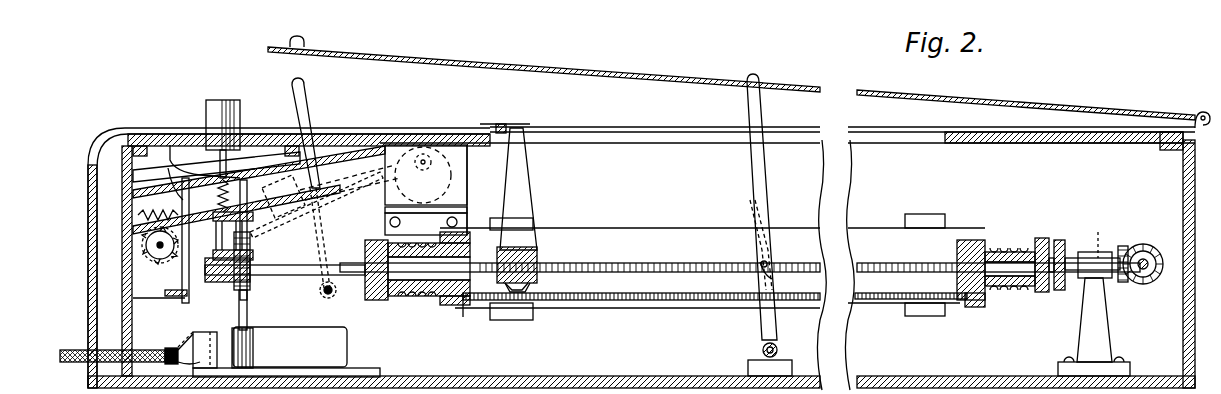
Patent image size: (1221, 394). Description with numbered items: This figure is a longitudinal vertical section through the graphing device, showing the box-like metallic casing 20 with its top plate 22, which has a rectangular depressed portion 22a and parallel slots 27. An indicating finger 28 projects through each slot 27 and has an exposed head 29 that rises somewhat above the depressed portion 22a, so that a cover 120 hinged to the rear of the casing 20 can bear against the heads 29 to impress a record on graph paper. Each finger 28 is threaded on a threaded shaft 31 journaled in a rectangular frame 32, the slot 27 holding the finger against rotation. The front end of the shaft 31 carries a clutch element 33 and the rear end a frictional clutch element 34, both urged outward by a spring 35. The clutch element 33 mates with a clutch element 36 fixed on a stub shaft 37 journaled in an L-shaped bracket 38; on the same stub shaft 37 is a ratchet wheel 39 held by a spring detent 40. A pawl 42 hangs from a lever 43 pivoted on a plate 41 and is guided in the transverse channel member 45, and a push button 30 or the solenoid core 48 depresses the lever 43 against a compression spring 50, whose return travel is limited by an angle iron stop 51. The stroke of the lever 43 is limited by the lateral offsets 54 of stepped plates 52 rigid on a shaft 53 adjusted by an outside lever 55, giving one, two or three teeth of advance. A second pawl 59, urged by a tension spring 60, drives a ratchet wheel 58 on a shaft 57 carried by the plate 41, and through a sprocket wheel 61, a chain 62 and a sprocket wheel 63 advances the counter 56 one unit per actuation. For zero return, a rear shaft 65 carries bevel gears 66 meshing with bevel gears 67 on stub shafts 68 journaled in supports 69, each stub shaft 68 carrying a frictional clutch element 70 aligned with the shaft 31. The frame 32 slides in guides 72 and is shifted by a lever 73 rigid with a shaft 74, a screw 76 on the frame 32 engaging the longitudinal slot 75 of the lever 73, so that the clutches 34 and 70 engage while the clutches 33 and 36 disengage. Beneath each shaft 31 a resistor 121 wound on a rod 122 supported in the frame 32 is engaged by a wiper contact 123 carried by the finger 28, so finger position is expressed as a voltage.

The casing 20 is at (500, 124).
The top plate 22 is at (1055, 135).
The depressed portion 22a is at (332, 132).
The slots 27 is at (612, 144).
The indicating finger 28 is at (522, 192).
The head 29 is at (518, 128).
The push button 30 is at (220, 100).
The threaded shaft 31 is at (636, 262).
The frame 32 is at (692, 240).
The clutch element 33 is at (408, 300).
The frictional clutch element 34 is at (1040, 292).
The spring 35 is at (426, 243).
The clutch element 36 is at (378, 300).
The stub shaft 37 is at (290, 276).
The L-shaped bracket 38 is at (310, 320).
The ratchet wheel 39 is at (250, 300).
The spring detent 40 is at (238, 307).
The plate 41 is at (125, 190).
The pawl 42 is at (248, 186).
The lever 43 is at (175, 134).
The channel member 45 is at (252, 246).
The core 48 is at (210, 323).
The compression spring 50 is at (218, 190).
The angle iron stop 51 is at (280, 134).
The plates 52 is at (322, 222).
The shaft 53 is at (332, 298).
The lateral offsets 54 is at (272, 222).
The lever 55 is at (302, 96).
The counter 56 is at (468, 168).
The shaft 57 is at (160, 260).
The ratchet wheel 58 is at (170, 296).
The second pawl 59 is at (170, 178).
The tension spring 60 is at (158, 205).
The sprocket wheel 61 is at (120, 250).
The chain 62 is at (340, 175).
The sprocket wheel 63 is at (440, 176).
The shaft 65 is at (1146, 256).
The bevel gear 66 is at (1152, 280).
The bevel gear 67 is at (1126, 246).
The stub shaft 68 is at (1092, 245).
The support 69 is at (1108, 328).
The frictional clutch element 70 is at (1058, 238).
The guides 72 is at (515, 320).
The lever 73 is at (758, 112).
The shaft 74 is at (778, 348).
The longitudinal slot 75 is at (776, 279).
The screw 76 is at (776, 252).
The cover 120 is at (678, 76).
The resistor 121 is at (648, 302).
The rod 122 is at (970, 298).
The wiper contact 123 is at (530, 287).